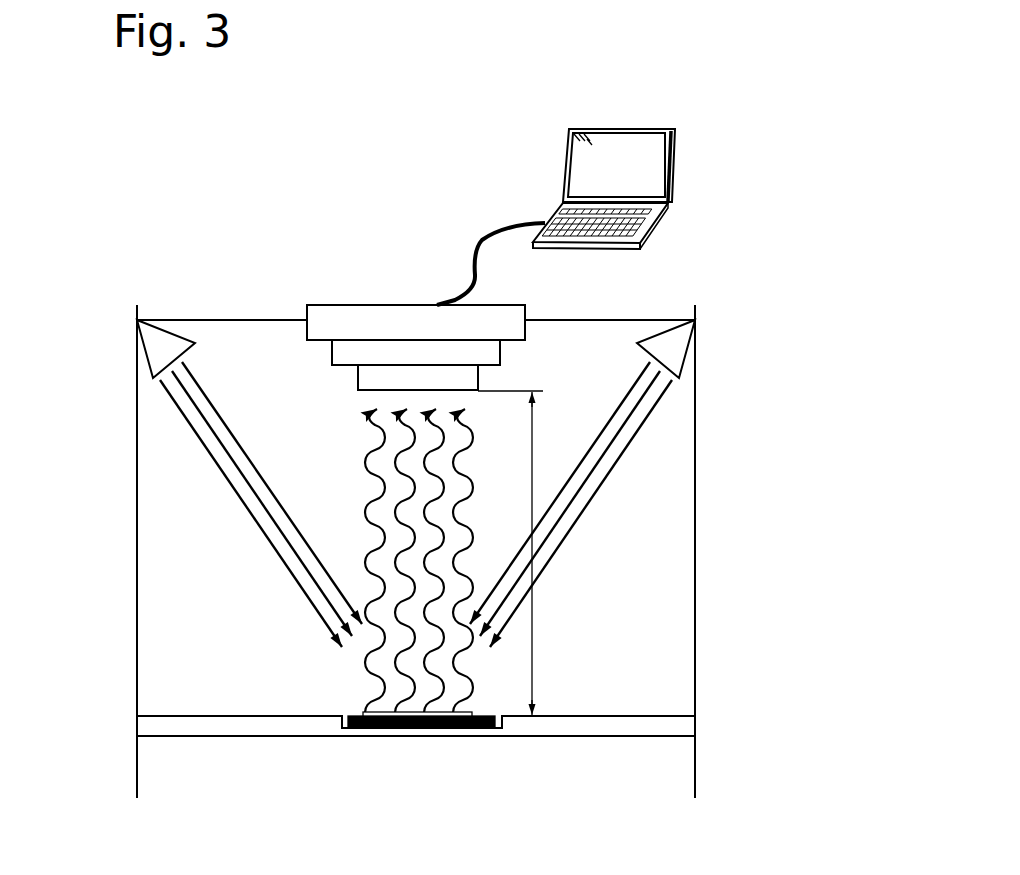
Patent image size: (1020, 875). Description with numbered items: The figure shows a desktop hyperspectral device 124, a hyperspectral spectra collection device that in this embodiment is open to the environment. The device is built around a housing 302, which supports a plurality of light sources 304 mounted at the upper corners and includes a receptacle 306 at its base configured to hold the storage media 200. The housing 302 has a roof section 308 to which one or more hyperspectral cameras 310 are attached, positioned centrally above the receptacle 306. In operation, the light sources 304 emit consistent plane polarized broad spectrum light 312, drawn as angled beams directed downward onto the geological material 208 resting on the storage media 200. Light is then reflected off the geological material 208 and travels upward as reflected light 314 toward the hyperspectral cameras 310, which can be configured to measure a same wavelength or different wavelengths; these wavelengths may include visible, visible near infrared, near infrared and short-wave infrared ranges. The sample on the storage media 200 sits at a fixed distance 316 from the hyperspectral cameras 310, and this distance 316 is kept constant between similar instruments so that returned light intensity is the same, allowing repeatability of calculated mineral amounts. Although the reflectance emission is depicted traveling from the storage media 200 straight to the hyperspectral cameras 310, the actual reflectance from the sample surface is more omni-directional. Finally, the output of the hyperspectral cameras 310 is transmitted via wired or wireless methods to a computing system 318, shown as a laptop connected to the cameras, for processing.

The desktop hyperspectral device 124 is at (432, 92).
The storage media 200 is at (470, 729).
The geological material 208 is at (362, 716).
The housing 302 is at (136, 531).
The light sources 304 is at (152, 343).
The receptacle 306 is at (412, 741).
The roof section 308 is at (246, 319).
The hyperspectral cameras 310 is at (376, 305).
The plane polarized broad spectrum light 312 is at (224, 526).
The reflected light 314 is at (352, 444).
The distance 316 is at (533, 443).
The computing system 318 is at (676, 162).